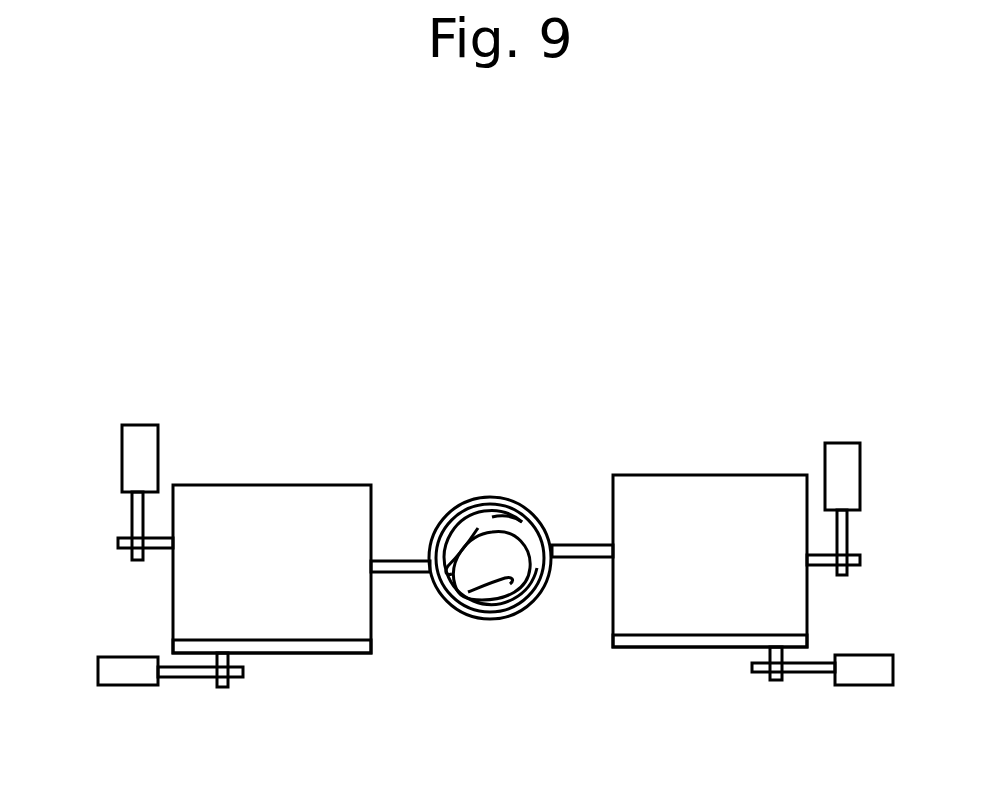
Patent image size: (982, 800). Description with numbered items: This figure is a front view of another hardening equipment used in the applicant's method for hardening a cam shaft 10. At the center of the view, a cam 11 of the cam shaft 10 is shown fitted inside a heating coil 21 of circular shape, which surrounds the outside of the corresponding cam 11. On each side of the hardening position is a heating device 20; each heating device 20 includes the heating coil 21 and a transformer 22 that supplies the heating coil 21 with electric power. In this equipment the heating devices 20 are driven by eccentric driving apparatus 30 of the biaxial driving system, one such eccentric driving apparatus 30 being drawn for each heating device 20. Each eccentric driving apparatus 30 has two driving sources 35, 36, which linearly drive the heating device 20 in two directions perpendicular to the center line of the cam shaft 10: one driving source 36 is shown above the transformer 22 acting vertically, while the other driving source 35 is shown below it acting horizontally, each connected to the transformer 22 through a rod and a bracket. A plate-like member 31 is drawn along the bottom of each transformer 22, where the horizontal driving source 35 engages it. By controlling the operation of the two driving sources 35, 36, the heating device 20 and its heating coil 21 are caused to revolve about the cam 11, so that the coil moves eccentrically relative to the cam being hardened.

The cam shaft 10 is at (540, 585).
The cam 11 is at (455, 527).
The heating device 20 is at (335, 450).
The heating coil 21 is at (520, 500).
The transformer 22 is at (268, 500).
The eccentric driving apparatus 30 is at (264, 712).
The base plate 31 is at (317, 652).
The driving source 35 is at (138, 687).
The driving source 36 is at (124, 442).